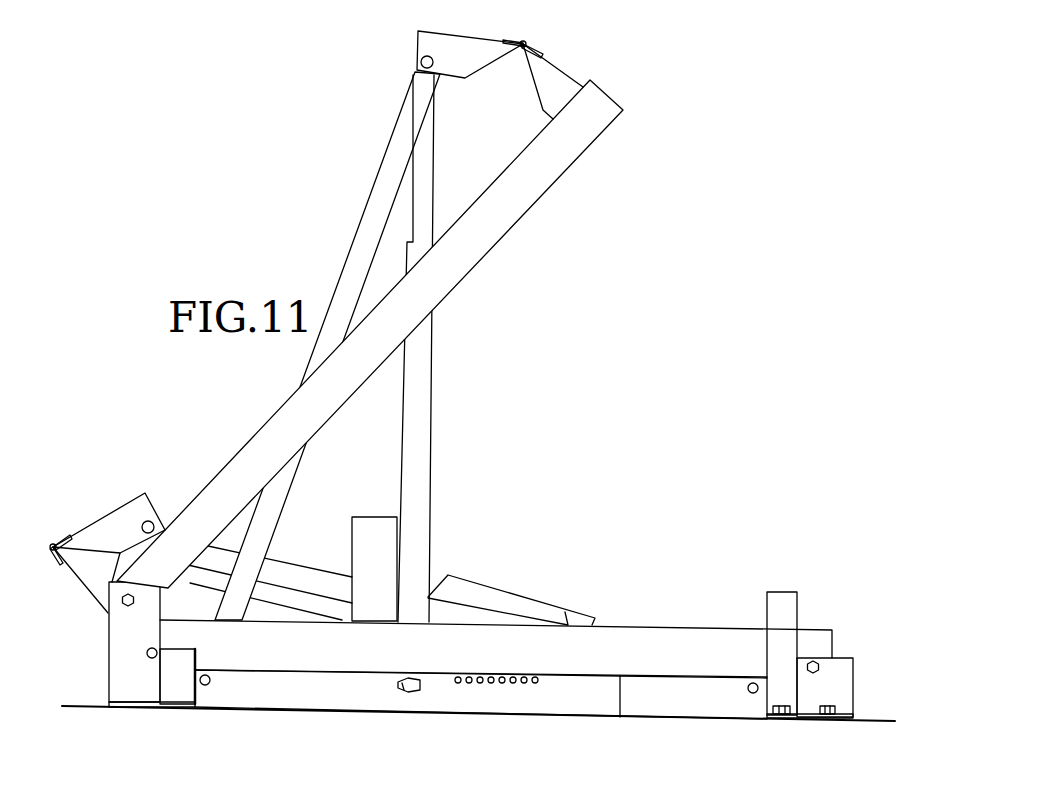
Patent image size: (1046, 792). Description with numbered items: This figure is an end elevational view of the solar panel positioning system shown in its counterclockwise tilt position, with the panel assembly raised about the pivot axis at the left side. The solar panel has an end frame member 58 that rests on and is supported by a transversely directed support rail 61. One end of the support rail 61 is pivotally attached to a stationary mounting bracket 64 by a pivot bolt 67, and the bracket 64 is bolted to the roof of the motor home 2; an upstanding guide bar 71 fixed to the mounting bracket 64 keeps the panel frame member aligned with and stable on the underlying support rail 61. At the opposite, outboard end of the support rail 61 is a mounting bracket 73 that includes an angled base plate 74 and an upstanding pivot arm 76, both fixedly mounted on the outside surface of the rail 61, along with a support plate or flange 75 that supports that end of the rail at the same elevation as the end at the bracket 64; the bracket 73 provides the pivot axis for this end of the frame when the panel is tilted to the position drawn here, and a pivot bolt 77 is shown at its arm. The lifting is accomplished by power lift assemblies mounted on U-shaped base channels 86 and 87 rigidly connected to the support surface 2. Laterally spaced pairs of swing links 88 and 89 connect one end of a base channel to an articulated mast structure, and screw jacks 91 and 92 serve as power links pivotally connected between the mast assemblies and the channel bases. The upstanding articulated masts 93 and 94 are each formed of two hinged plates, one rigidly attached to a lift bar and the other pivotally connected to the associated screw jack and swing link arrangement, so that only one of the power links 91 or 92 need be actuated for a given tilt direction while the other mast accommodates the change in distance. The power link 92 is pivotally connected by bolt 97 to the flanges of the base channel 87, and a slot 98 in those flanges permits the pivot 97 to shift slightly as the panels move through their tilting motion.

The motor home 2 is at (873, 717).
The end frame member 58 is at (499, 236).
The support rail 61 is at (682, 638).
The stationary mounting bracket 64 is at (842, 685).
The pivot bolt 67 is at (827, 655).
The upstanding guide bar 71 is at (783, 610).
The mounting bracket 73 is at (143, 652).
The angled base plate 74 is at (180, 668).
The support plate 75 is at (158, 708).
The upstanding pivot arm 76 is at (145, 617).
The pivot bolt 77 is at (130, 593).
The U-shaped base channel 86 is at (697, 707).
The U-shaped base channel 87 is at (547, 702).
The swing link 88 is at (280, 568).
The swing link 89 is at (282, 483).
The screw jack 91 is at (317, 600).
The screw jack 92 is at (430, 455).
The articulated mast structure 93 is at (567, 42).
The articulated mast structure 94 is at (88, 512).
The pivot bolt 97 is at (407, 690).
The slot 98 is at (410, 680).